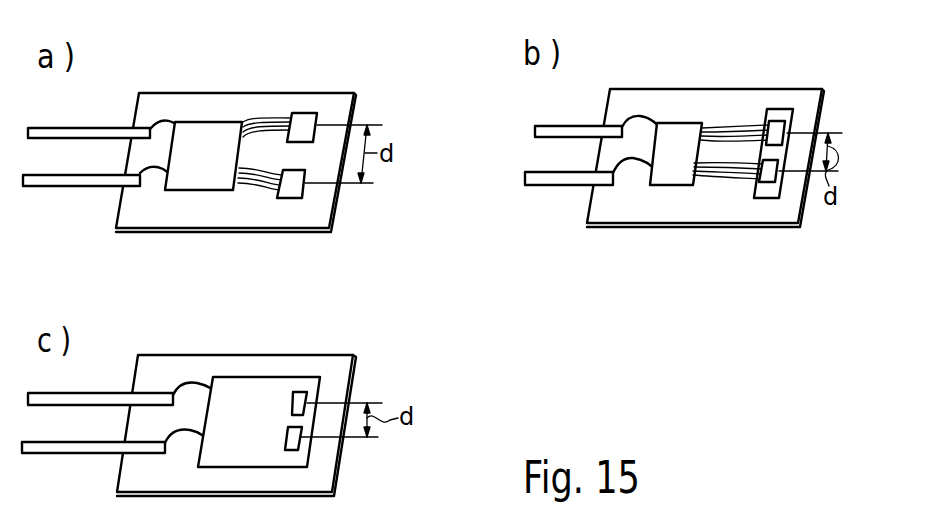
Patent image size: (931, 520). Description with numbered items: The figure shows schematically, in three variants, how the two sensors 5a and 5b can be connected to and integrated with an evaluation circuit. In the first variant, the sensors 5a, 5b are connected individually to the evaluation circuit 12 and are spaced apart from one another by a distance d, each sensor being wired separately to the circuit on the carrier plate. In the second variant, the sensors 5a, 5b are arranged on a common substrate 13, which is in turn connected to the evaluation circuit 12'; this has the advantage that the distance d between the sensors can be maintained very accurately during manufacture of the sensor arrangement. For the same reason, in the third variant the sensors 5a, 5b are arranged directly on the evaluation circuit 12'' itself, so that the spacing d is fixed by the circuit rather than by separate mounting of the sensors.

In FIG. 15a, the evaluation circuit 12 is at (203, 111).
In FIG. 15b, the evaluation circuit 12' is at (676, 108).
In FIG. 15c, the evaluation circuit 12'' is at (259, 382).
In FIG. 15b, the common substrate 13 is at (775, 113).
In FIG. 15a, the sensor 5a is at (300, 117).
In FIG. 15b, the sensor 5a is at (778, 127).
In FIG. 15c, the sensor 5a is at (303, 395).
In FIG. 15a, the sensor 5b is at (297, 190).
In FIG. 15b, the sensor 5b is at (767, 180).
In FIG. 15c, the sensor 5b is at (297, 442).